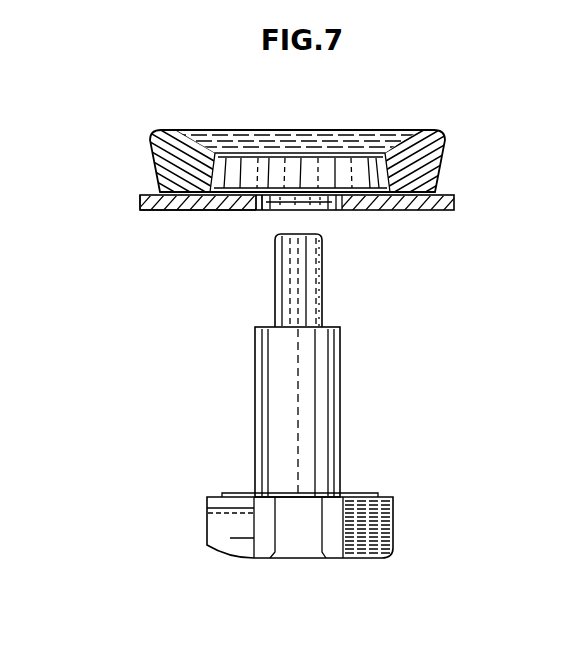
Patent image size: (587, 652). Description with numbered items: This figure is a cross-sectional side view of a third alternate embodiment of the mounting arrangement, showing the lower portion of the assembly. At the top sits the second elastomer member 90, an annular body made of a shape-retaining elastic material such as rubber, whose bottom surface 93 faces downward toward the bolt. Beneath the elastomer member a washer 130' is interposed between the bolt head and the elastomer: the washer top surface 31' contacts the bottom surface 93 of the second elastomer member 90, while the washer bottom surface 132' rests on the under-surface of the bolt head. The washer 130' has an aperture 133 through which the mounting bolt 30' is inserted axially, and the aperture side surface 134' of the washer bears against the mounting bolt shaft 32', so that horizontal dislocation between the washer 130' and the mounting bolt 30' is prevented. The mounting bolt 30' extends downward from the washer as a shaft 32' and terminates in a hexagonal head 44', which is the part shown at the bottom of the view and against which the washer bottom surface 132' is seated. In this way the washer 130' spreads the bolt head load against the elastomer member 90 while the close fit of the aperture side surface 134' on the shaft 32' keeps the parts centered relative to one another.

The second elastomer member 90 is at (444, 152).
The washer 130' is at (335, 208).
The washer top surface 31' is at (104, 177).
The washer bottom surface 132' is at (158, 244).
The bottom surface 93 is at (188, 212).
The aperture 133 is at (330, 212).
The aperture side surface 134' is at (231, 238).
The mounting bolt shaft 32' is at (329, 365).
The mounting bolt 30' is at (300, 559).
The hexagonal head 44' is at (197, 526).